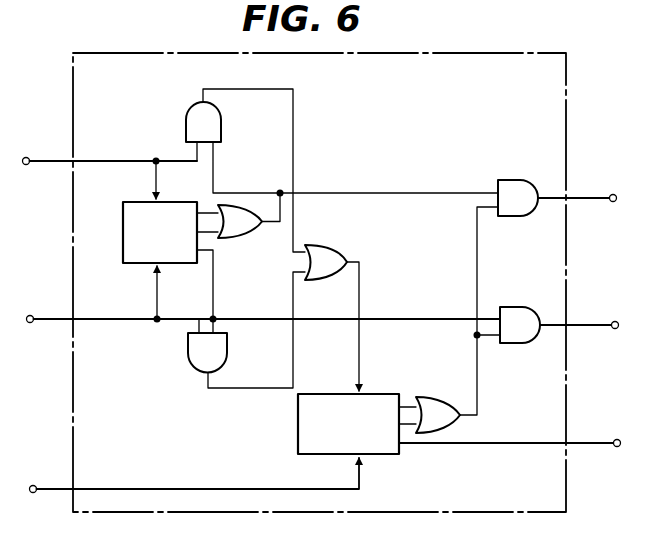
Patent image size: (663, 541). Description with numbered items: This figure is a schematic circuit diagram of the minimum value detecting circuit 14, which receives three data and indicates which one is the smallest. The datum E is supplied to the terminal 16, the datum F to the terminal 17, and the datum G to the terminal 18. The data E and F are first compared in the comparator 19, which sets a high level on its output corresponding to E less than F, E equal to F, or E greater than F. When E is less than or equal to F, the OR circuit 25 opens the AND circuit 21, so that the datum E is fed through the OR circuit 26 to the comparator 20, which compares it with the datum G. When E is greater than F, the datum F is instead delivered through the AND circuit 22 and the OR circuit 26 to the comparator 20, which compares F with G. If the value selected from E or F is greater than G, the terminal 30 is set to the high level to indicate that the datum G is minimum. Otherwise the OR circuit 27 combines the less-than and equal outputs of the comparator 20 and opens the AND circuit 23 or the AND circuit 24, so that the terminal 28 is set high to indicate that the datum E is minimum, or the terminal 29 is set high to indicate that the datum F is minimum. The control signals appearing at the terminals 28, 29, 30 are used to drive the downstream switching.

The minimum value detecting circuit 14 is at (507, 52).
The terminal 16 is at (26, 165).
The terminal 17 is at (30, 323).
The terminal 18 is at (33, 493).
The comparator 19 is at (120, 252).
The comparator 20 is at (298, 427).
The AND circuit 21 is at (186, 124).
The AND circuit 22 is at (188, 352).
The AND circuit 23 is at (515, 216).
The AND circuit 24 is at (525, 343).
The OR circuit 25 is at (236, 239).
The OR circuit 26 is at (324, 281).
The OR circuit 27 is at (452, 430).
The terminal 28 is at (613, 202).
The terminal 29 is at (615, 329).
The terminal 30 is at (617, 447).